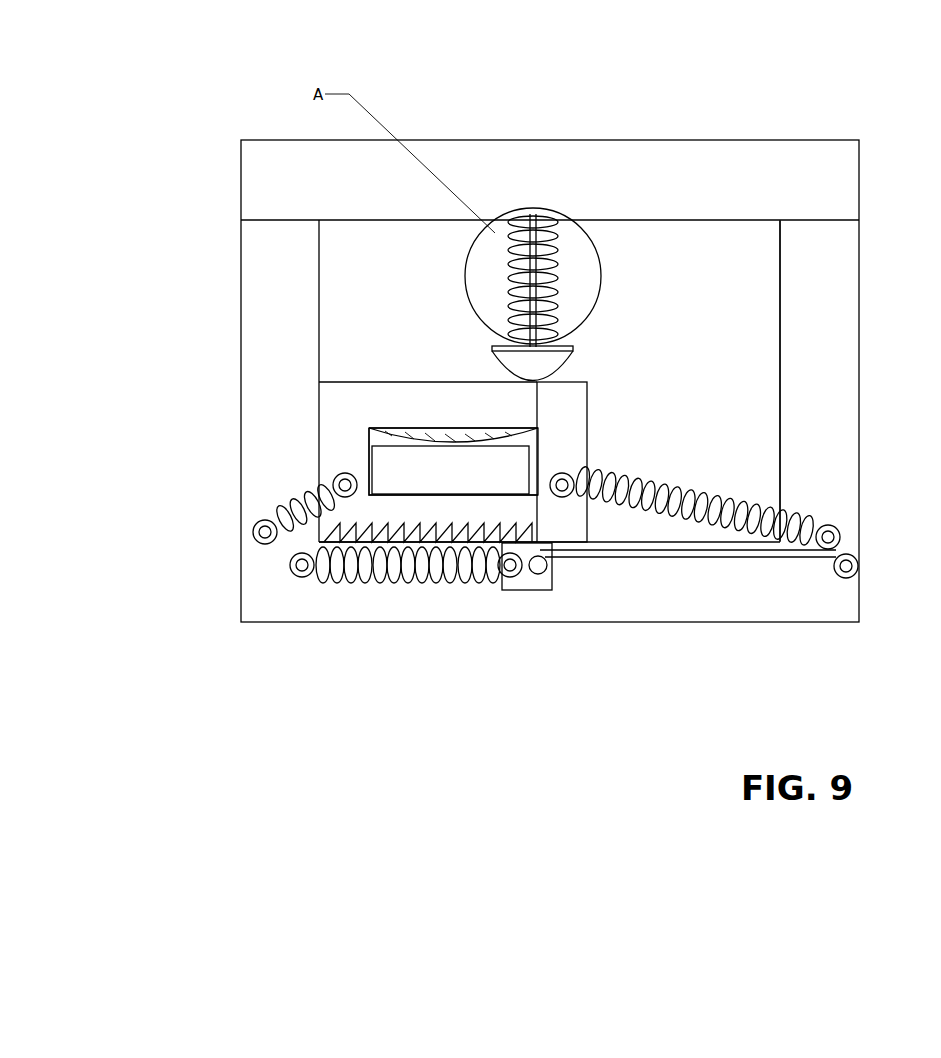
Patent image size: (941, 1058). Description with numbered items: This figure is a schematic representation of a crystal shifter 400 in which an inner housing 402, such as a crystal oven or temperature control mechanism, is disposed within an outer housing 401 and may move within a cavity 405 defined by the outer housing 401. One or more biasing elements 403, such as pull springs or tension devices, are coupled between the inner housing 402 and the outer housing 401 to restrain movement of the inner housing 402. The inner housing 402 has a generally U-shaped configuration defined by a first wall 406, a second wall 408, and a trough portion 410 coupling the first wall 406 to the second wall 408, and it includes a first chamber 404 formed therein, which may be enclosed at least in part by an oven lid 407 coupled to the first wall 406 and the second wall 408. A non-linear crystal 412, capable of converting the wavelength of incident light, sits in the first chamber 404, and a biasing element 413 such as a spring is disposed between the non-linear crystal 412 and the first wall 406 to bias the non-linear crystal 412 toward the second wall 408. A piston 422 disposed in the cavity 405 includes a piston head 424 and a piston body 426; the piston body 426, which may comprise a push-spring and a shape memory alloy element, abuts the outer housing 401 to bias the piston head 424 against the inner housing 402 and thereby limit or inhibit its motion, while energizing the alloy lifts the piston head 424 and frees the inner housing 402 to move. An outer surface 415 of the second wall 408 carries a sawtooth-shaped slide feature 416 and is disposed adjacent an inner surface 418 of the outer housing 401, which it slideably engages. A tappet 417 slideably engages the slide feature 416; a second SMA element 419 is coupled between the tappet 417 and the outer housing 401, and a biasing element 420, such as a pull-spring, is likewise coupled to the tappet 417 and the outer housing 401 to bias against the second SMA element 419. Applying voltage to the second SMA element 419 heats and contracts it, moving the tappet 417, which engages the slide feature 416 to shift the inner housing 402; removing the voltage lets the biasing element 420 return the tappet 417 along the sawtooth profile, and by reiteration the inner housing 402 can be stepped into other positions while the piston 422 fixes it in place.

The crystal shifter 400 is at (212, 142).
The outer housing 401 is at (817, 375).
The inner housing 402 is at (352, 368).
The biasing elements 403 is at (275, 545).
The first chamber 404 is at (440, 428).
The cavity 405 is at (716, 258).
The first wall 406 is at (345, 400).
The oven lid 407 is at (565, 418).
The second wall 408 is at (400, 508).
The trough portion 410 is at (330, 460).
The non-linear crystal 412 is at (440, 473).
The biasing element 413 is at (370, 430).
The outer surface 415 is at (338, 537).
The slide feature 416 is at (472, 540).
The tappet 417 is at (523, 583).
The inner surface 418 is at (623, 540).
The second SMA element 419 is at (762, 557).
The biasing element 420 is at (465, 545).
The piston 422 is at (485, 280).
The piston head 424 is at (573, 357).
The piston body 426 is at (556, 250).